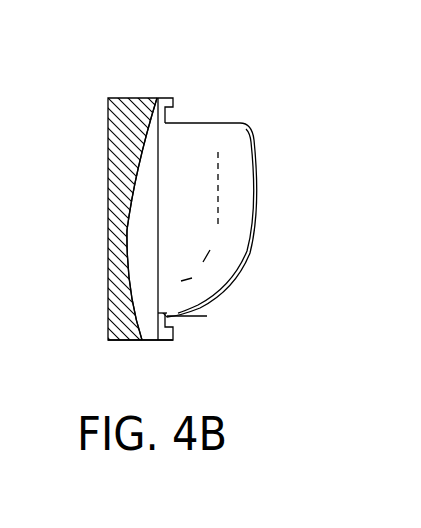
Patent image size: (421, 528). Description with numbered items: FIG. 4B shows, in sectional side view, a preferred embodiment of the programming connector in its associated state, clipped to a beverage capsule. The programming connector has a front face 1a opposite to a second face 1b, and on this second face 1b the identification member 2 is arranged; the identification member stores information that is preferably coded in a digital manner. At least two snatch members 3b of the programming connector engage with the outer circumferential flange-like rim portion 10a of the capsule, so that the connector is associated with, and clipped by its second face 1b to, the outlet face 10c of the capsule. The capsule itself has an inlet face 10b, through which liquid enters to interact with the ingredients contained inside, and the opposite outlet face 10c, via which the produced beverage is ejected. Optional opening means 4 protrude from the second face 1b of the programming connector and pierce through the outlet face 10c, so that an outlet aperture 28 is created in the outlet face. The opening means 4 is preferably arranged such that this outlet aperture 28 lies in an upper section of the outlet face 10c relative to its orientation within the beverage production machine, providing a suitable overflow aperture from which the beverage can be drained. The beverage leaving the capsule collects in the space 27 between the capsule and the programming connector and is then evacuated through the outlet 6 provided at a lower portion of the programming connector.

The front face 1a is at (108, 114).
The second face 1b is at (160, 178).
The identification member 2 is at (113, 240).
The snatch members 3b is at (166, 97).
The opening means 4 is at (142, 219).
The outlet 6 is at (142, 342).
The flange-like rim portion 10a is at (207, 317).
The inlet face 10b is at (241, 278).
The outlet face 10c is at (157, 258).
The space 27 is at (142, 290).
The outlet aperture 28 is at (128, 161).